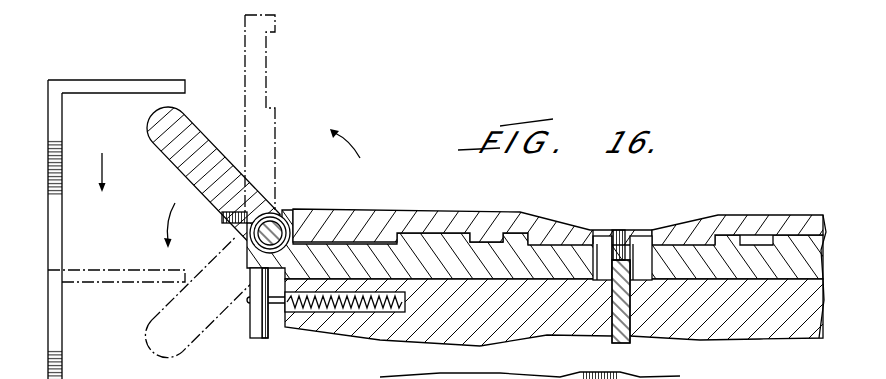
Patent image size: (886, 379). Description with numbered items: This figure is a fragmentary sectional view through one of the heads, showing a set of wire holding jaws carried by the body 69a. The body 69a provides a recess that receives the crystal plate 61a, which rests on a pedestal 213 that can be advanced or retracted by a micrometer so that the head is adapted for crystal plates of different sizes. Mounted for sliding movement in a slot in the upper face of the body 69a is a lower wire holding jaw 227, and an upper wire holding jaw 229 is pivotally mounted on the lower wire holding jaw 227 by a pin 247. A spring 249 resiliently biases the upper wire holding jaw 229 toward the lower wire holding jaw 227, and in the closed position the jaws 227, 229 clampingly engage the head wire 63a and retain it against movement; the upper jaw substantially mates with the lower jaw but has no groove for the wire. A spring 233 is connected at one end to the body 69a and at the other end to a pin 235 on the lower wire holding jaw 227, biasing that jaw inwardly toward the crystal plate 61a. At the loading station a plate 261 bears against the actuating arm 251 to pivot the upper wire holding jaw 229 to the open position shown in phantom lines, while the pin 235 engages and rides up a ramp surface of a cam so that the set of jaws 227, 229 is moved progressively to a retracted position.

The plate 261 is at (122, 80).
The actuating arm 251 is at (160, 128).
The upper wire holding jaw 229 is at (278, 24).
The lower wire holding jaw 227 is at (427, 234).
The pin 247 is at (276, 226).
The spring 249 is at (232, 223).
The pin 235 is at (260, 328).
The spring 233 is at (382, 312).
The pedestal 213 is at (628, 342).
The head wire 63a is at (600, 243).
The crystal plate 61a is at (618, 230).
The body 69a is at (782, 325).